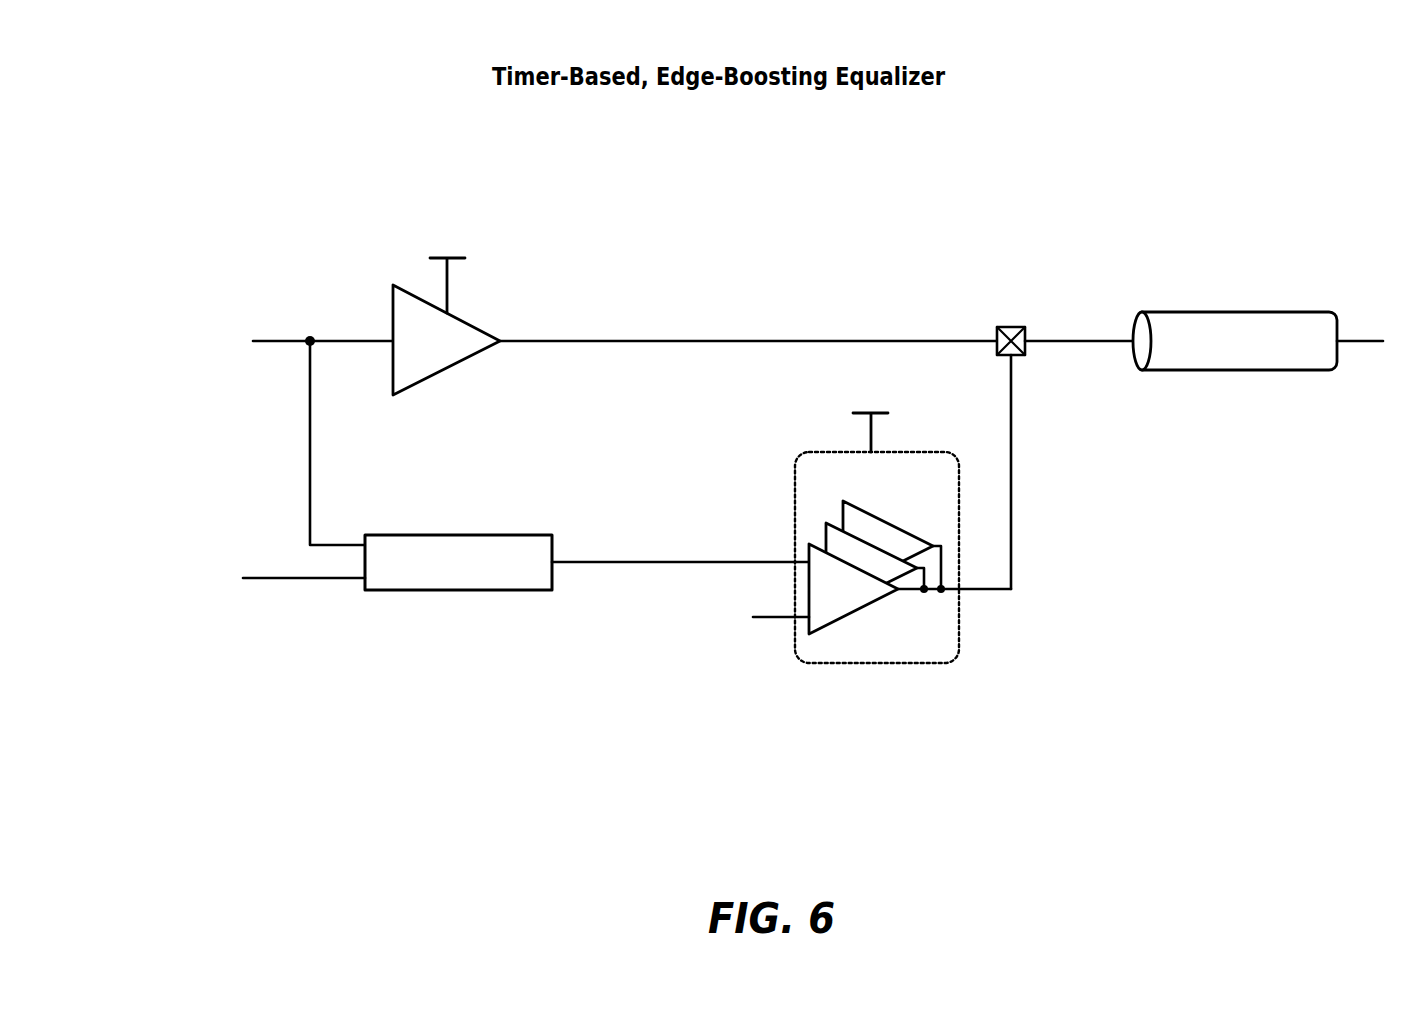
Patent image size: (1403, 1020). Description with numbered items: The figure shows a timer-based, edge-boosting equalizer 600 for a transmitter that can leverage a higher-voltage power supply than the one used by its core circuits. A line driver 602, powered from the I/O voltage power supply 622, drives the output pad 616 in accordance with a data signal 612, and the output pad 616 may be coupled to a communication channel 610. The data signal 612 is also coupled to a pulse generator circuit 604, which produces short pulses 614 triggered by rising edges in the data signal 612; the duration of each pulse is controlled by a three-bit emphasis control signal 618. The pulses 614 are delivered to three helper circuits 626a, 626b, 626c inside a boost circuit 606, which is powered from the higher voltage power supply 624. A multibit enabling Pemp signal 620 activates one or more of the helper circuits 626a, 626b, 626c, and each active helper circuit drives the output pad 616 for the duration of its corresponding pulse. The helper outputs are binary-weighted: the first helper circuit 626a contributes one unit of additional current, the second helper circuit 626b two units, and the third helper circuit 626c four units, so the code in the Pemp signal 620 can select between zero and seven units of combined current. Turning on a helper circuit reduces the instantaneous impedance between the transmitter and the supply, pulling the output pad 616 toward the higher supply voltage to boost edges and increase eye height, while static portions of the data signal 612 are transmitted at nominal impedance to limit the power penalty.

The timer-based, edge-boosting equalizer 600 is at (119, 41).
The line driver 602 is at (392, 295).
The pulse generator circuit 604 is at (421, 534).
The boost circuit 606 is at (922, 663).
The communication channel 610 is at (1188, 312).
The data signal 612 is at (286, 340).
The pulses 614 is at (589, 562).
The output pad 616 is at (1009, 327).
The Pemp 2:0 emphasis control signal 618 is at (295, 580).
The Pemp signal 620 is at (770, 618).
The I/O voltage power supply 622 is at (450, 275).
The higher voltage power supply 624 is at (871, 430).
The first helper circuit 626a is at (840, 612).
The second helper circuit 626b is at (826, 539).
The third helper circuit 626c is at (870, 522).